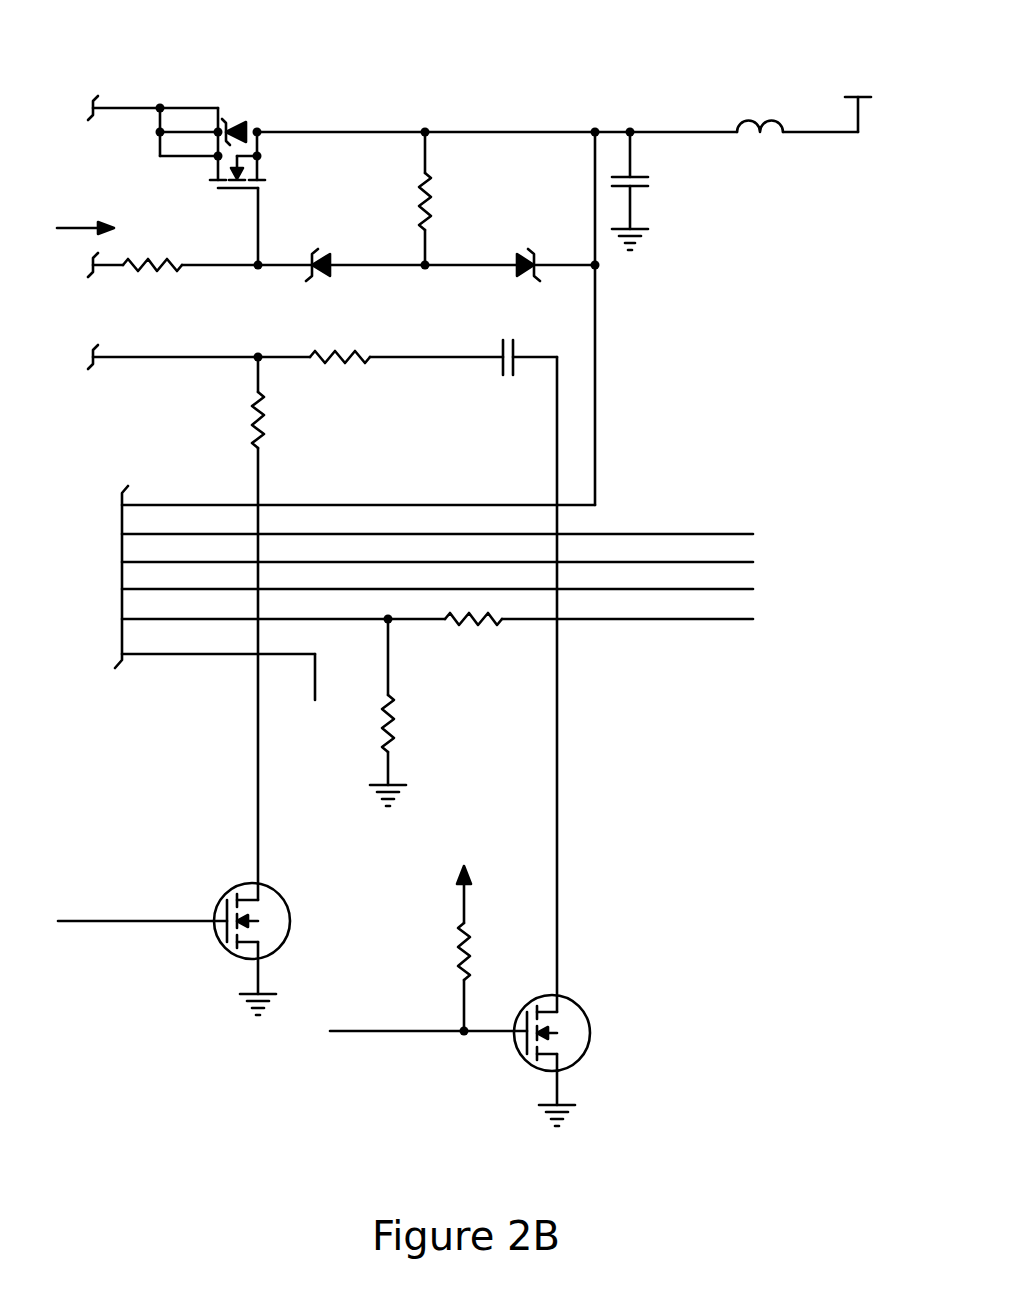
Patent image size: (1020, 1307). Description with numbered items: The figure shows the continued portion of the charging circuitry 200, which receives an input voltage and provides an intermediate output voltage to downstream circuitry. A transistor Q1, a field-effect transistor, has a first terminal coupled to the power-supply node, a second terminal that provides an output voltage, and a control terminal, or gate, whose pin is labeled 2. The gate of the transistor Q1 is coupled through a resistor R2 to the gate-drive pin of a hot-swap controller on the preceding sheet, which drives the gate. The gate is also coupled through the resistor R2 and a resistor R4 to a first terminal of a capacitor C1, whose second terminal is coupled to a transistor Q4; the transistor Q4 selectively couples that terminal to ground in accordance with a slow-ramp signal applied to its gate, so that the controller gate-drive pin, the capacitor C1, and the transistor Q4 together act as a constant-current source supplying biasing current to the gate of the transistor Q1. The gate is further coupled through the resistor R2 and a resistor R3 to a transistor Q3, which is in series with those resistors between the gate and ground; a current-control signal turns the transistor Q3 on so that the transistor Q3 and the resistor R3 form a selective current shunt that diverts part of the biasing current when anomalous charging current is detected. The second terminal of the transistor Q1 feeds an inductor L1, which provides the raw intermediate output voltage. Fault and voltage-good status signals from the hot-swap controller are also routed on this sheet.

The charging circuitry 200 is at (318, 28).
The gate pin of transistor Q1 2 is at (238, 226).
The transistor Q1 is at (179, 139).
The resistor R2 is at (152, 266).
The resistor R3 is at (280, 420).
The resistor R4 is at (340, 360).
The capacitor C1 is at (501, 359).
The inductor L1 is at (760, 113).
The transistor Q3 is at (260, 915).
The transistor Q4 is at (559, 1026).